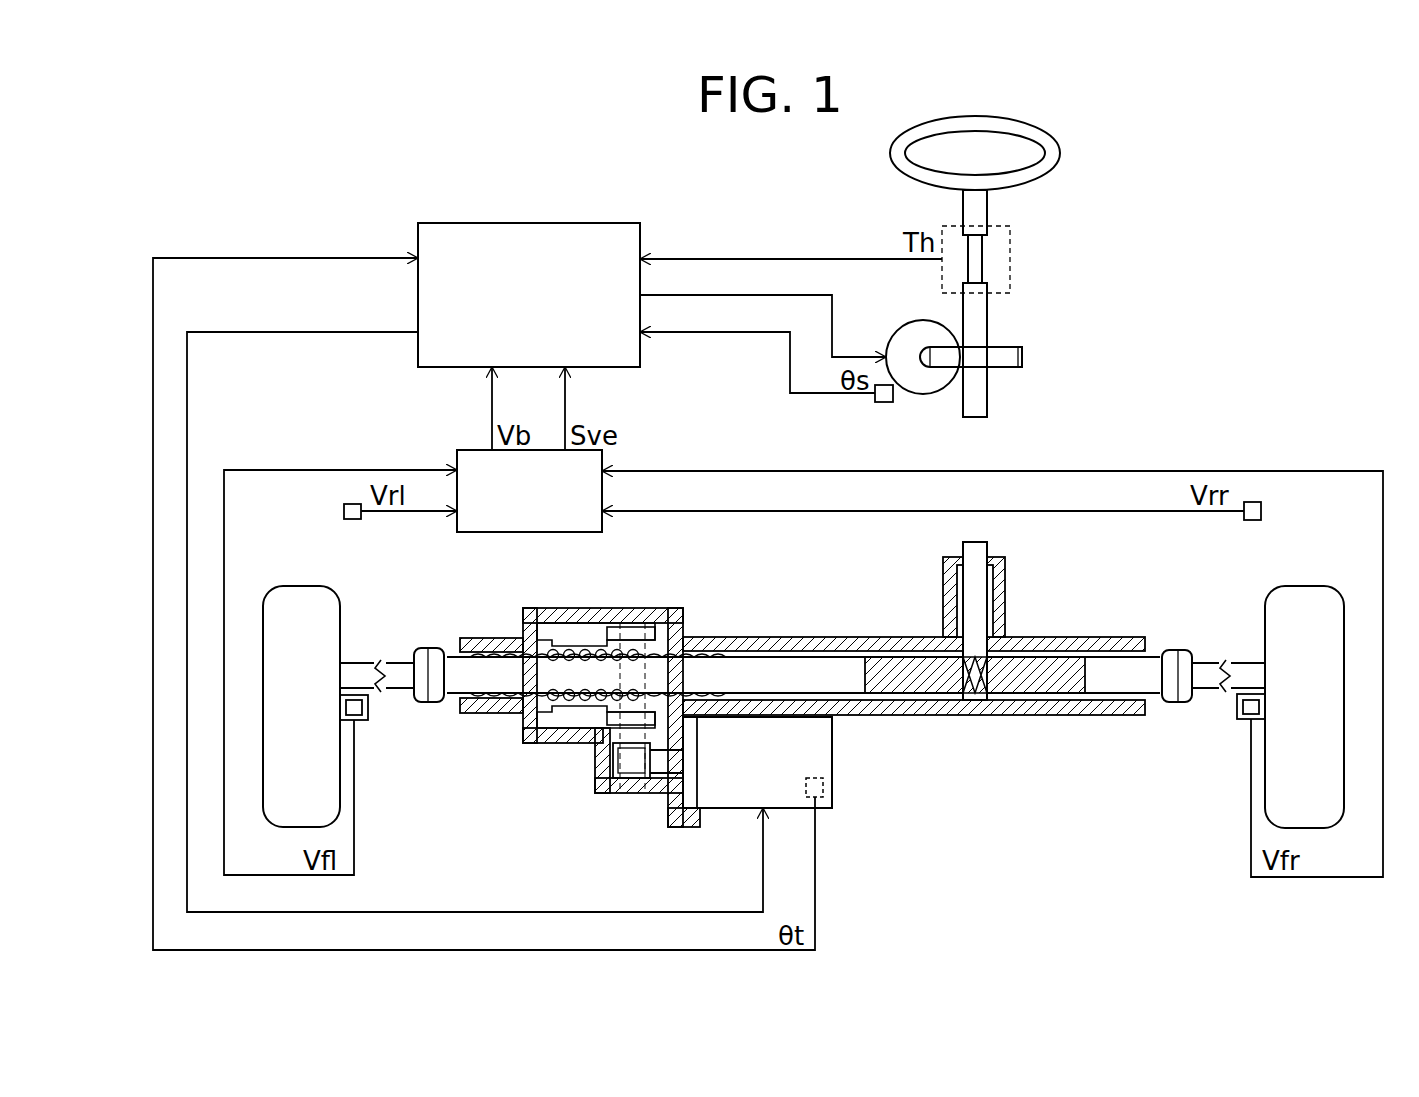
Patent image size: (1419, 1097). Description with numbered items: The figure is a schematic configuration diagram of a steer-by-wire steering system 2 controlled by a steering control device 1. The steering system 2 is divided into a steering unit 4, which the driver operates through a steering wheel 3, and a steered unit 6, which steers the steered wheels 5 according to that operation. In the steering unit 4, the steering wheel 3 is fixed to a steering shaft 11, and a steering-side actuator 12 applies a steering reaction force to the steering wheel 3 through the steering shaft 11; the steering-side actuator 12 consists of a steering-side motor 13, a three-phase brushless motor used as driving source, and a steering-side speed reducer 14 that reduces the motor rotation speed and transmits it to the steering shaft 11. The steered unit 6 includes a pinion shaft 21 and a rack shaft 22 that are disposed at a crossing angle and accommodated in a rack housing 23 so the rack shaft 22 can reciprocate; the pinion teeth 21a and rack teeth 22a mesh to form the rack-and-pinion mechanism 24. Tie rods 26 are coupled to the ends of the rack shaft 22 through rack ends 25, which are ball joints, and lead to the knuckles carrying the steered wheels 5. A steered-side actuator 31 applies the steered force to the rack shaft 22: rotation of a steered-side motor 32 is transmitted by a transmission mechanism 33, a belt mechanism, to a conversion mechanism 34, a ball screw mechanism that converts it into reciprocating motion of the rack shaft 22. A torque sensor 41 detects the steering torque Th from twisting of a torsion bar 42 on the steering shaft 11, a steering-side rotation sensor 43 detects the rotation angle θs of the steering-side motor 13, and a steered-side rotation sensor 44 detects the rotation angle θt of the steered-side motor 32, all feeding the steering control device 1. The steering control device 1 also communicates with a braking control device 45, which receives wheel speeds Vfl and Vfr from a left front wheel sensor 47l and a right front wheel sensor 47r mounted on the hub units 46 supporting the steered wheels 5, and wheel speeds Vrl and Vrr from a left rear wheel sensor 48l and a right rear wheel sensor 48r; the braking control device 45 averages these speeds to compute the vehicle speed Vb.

The steering control device 1 is at (578, 223).
The steering system 2 is at (1323, 160).
The steering wheel 3 is at (1040, 147).
The steering unit 4 is at (1162, 377).
The steered wheels 5 is at (290, 586).
The steered unit 6 is at (1205, 572).
The steering shaft 11 is at (990, 318).
The steering-side actuator 12 is at (1020, 400).
The steering-side motor 13 is at (910, 325).
The steering-side speed reducer 14 is at (930, 372).
The pinion shaft 21 is at (987, 545).
The pinion teeth 21a is at (975, 700).
The rack shaft 22 is at (782, 650).
The rack teeth 22a is at (938, 690).
The rack housing 23 is at (715, 637).
The rack-and-pinion mechanism 24 is at (1000, 702).
The rack ends 25 is at (430, 705).
The tie rods 26 is at (368, 663).
The steered-side actuator 31 is at (485, 840).
The steered-side motor 32 is at (832, 755).
The transmission mechanism 33 is at (625, 776).
The conversion mechanism 34 is at (555, 735).
The torque sensor 41 is at (1010, 232).
The torsion bar 42 is at (985, 262).
The steering-side rotation sensor 43 is at (880, 405).
The steered-side rotation sensor 44 is at (812, 778).
The braking control device 45 is at (530, 532).
The hub units 46 is at (350, 692).
The left front wheel sensor 47l is at (352, 718).
The right front wheel sensor 47r is at (1255, 720).
The left rear wheel sensor 48l is at (344, 512).
The right rear wheel sensor 48r is at (1262, 512).